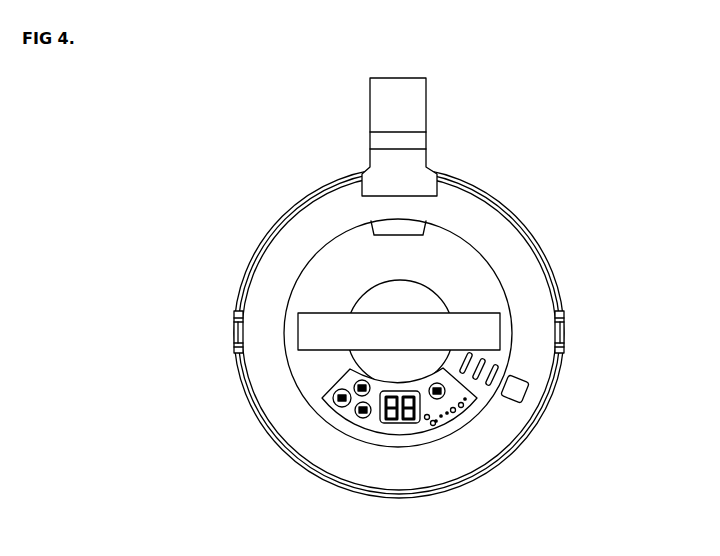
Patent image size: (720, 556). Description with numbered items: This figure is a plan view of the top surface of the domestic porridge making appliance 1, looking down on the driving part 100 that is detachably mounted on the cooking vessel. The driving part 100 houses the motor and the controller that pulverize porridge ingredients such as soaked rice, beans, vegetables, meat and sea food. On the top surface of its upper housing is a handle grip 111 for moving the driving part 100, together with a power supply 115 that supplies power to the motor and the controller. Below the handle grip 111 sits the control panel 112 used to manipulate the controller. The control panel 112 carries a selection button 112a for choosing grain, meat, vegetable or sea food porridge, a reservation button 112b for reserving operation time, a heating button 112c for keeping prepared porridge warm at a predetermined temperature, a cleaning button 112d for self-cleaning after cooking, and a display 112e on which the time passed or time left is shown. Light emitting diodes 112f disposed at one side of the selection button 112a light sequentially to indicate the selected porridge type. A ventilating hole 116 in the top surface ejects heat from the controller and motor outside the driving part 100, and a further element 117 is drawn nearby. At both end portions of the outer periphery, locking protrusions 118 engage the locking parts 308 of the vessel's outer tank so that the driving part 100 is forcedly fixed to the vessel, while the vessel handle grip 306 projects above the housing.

The domestic porridge making appliance 1 is at (434, 288).
The driving part 100 is at (521, 224).
The handle grip 111 is at (482, 331).
The control panel 112 is at (392, 450).
The selection button 112a is at (447, 393).
The reservation button 112b is at (352, 372).
The heating button 112c is at (357, 416).
The cleaning button 112d is at (334, 401).
The display 112e is at (381, 423).
The light emitting diodes 112f is at (453, 412).
The power supply 115 is at (398, 233).
The ventilating hole 116 is at (497, 360).
The sensor window 117 is at (518, 394).
The locking protrusion 118 is at (233, 333).
The vessel handle grip 306 is at (408, 108).
The locking parts 308 is at (407, 324).